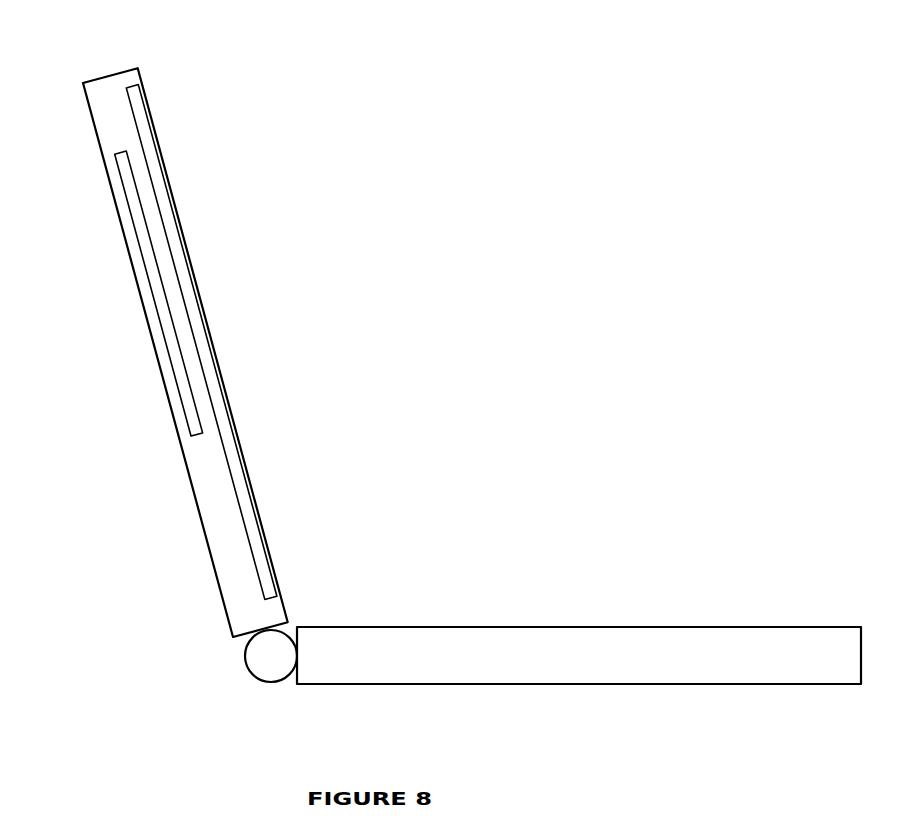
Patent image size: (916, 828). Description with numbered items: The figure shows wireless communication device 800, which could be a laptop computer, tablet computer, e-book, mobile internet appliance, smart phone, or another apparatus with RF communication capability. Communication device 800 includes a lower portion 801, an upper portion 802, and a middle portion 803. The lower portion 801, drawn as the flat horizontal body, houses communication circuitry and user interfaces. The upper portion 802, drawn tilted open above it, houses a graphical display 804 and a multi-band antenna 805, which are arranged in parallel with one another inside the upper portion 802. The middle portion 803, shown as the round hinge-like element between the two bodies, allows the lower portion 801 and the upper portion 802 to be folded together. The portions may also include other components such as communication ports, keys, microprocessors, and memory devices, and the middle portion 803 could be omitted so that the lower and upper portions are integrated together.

The wireless communication device 800 is at (677, 91).
The lower portion 801 is at (840, 627).
The upper portion 802 is at (103, 76).
The middle portion 803 is at (250, 674).
The graphical display 804 is at (140, 80).
The multi-band antenna 805 is at (121, 187).